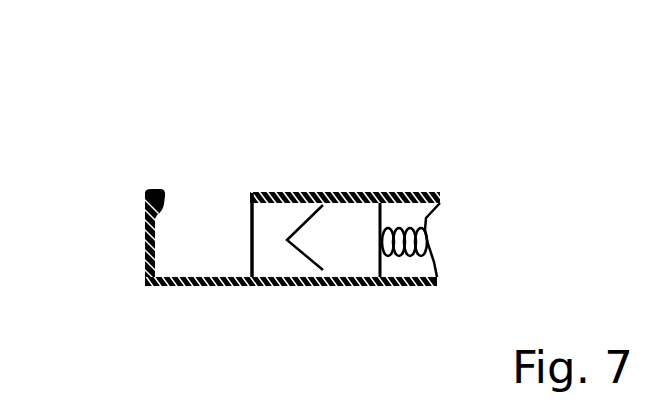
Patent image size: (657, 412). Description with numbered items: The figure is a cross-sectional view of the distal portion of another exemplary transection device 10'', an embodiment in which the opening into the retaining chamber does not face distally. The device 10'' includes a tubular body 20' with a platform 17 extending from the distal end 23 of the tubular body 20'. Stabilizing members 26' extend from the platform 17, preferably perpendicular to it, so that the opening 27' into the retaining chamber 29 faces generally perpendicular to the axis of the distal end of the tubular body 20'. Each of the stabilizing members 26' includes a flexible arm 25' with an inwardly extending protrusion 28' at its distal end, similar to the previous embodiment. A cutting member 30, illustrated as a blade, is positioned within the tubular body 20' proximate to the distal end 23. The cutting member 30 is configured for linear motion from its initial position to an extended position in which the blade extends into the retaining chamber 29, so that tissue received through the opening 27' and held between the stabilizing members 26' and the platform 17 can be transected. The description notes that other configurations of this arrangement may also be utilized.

The transection device 10'' is at (213, 65).
The platform 17 is at (193, 286).
The tubular body 20' is at (361, 200).
The distal end 23 is at (257, 192).
The flexible arm 25' is at (83, 235).
The stabilizing members 26' is at (102, 281).
The opening 27' is at (191, 157).
The inwardly extending protrusion 28' is at (119, 241).
The retaining chamber 29 is at (225, 252).
The cutting member 30 is at (333, 218).